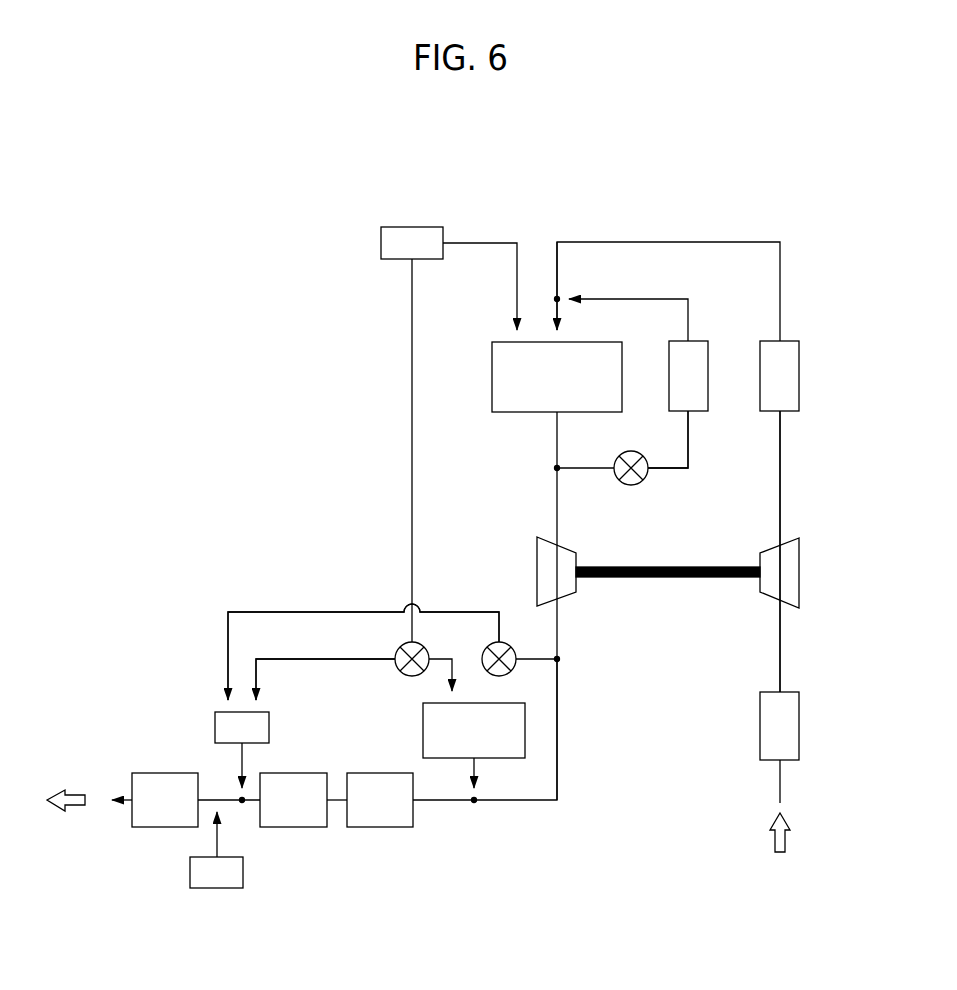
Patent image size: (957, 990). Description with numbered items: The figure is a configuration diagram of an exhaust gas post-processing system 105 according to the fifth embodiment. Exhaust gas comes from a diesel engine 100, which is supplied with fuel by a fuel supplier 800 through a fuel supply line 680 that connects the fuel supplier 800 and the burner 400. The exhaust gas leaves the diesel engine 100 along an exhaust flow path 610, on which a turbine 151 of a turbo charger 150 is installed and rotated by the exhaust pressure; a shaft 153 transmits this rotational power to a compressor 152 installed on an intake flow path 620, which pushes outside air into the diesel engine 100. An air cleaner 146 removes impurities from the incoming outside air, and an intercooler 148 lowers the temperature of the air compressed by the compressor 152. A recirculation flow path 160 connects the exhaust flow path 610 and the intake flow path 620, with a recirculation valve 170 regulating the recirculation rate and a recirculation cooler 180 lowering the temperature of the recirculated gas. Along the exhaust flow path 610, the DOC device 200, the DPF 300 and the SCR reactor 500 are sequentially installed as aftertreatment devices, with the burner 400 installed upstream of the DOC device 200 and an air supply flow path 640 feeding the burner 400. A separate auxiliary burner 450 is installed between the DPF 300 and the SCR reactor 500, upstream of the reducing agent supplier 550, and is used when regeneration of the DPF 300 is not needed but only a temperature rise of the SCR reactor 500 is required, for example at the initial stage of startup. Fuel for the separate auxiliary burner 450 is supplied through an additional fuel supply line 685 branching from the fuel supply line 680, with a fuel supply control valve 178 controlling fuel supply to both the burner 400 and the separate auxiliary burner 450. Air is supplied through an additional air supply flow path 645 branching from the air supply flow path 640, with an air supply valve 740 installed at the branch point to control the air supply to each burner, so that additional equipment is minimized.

The exhaust gas post-processing system 105 is at (296, 351).
The fuel supplier 800 is at (406, 224).
The diesel engine 100 is at (490, 398).
The recirculation cooler 180 is at (699, 338).
The intercooler 148 is at (797, 338).
The intake flow path 620 is at (786, 468).
The fuel supply line 680 is at (409, 484).
The exhaust flow path 610 is at (554, 513).
The EGR valve 170 is at (631, 488).
The recirculation flow path 160 is at (689, 472).
The turbine 151 is at (580, 591).
The shaft 153 is at (672, 579).
The compressor 152 is at (758, 592).
The turbo charger 150 is at (745, 645).
The air cleaner 146 is at (758, 748).
The additional air supply flow path 645 is at (259, 606).
The additional fuel supply line 685 is at (363, 653).
The air supply valve 740 is at (489, 640).
The fuel supply control valve 178 is at (394, 669).
The separate auxiliary burner 450 is at (213, 728).
The burner 400 is at (421, 738).
The air supply flow path 640 is at (538, 672).
The SCR reactor 500 is at (145, 831).
The reducing agent supplier 550 is at (217, 892).
The diesel particulate filter 300 is at (292, 831).
The diesel oxidation catalyst device 200 is at (387, 831).